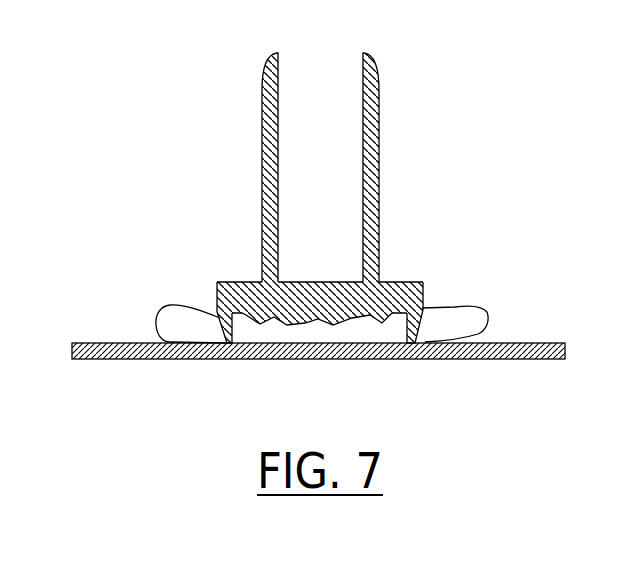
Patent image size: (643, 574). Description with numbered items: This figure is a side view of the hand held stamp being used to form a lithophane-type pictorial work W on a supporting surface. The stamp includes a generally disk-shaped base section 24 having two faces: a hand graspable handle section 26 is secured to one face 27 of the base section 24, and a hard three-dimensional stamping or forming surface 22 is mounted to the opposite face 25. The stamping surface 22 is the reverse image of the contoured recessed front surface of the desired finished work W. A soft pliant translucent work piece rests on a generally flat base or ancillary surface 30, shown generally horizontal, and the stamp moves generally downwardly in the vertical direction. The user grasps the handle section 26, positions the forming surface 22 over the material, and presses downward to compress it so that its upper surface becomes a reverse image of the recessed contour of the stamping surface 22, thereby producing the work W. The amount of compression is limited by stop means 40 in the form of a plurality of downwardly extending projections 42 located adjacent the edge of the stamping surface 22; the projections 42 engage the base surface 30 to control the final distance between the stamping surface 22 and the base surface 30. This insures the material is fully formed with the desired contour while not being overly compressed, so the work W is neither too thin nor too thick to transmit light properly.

The stamping surface 22 is at (334, 323).
The base section 24 is at (431, 289).
The opposite face 25 is at (240, 313).
The handle section 26 is at (272, 75).
The face 27 is at (236, 282).
The base surface 30 is at (548, 343).
The stop means 40 is at (423, 325).
The projections 42 is at (219, 332).
The lithophane-type pictorial work W is at (372, 328).